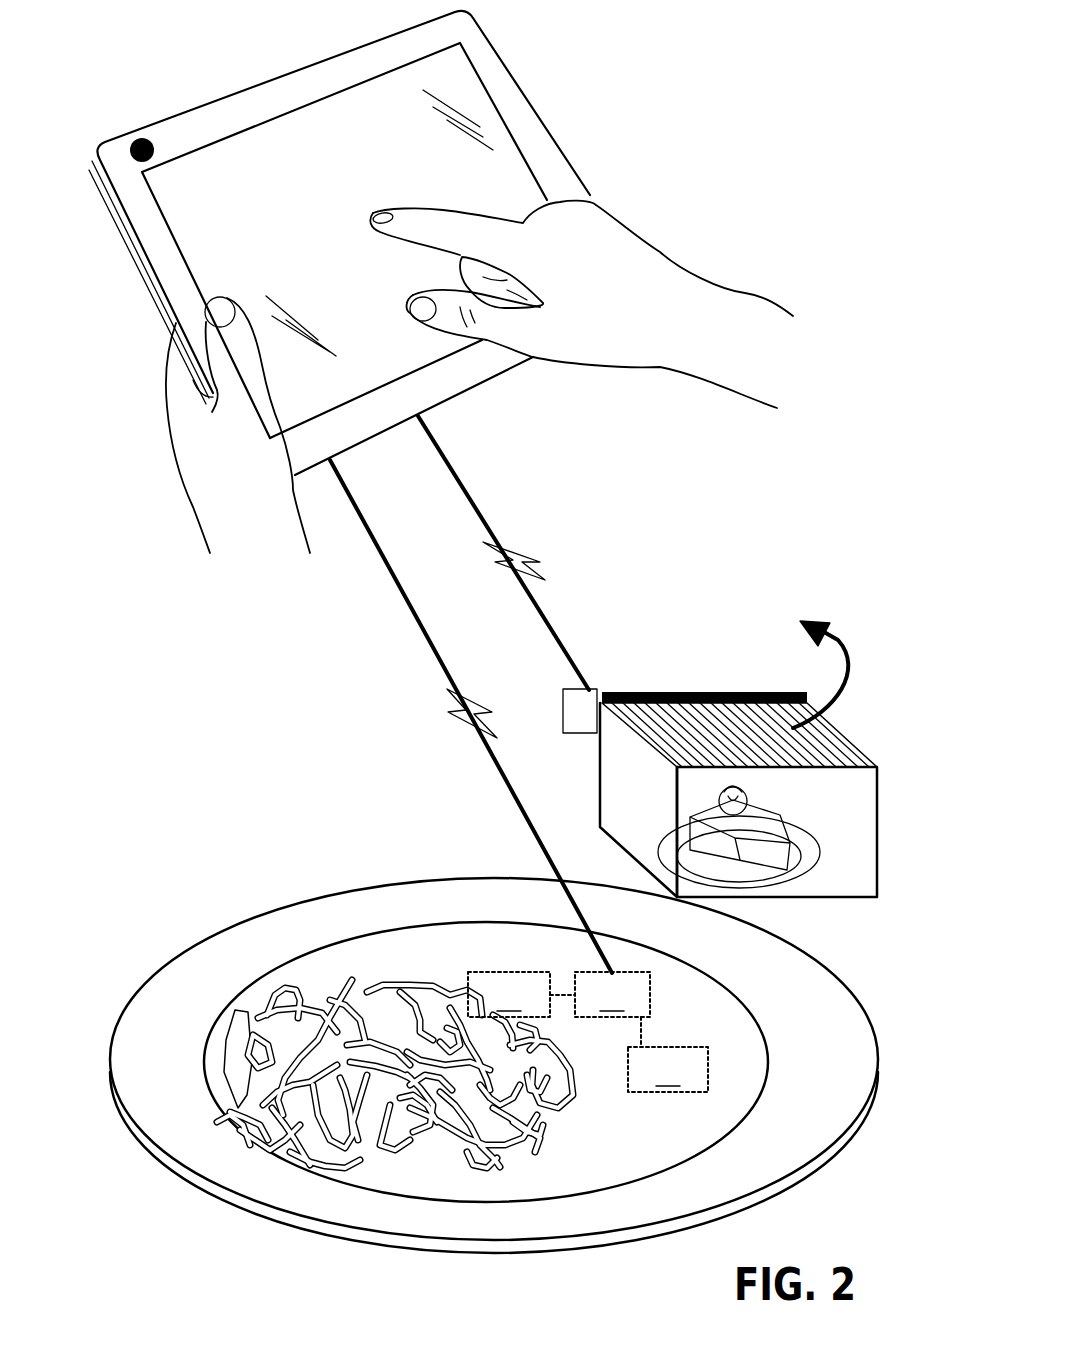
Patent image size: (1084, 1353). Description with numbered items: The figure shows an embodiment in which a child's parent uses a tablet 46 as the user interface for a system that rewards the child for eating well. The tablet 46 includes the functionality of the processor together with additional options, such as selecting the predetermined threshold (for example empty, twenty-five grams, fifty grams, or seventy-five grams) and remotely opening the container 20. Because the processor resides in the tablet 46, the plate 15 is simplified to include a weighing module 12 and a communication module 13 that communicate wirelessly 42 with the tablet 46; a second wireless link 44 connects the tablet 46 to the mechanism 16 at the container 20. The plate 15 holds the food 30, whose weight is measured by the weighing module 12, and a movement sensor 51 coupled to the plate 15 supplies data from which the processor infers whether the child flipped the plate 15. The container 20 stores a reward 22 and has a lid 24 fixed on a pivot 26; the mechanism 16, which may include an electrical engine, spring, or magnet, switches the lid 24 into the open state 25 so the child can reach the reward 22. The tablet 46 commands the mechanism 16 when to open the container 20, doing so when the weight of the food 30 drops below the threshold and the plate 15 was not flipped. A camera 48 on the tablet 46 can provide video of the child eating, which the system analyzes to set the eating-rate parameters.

The weighing module 12 is at (509, 994).
The communication module 13 is at (600, 1009).
The movement sensor 51 is at (668, 1069).
The plate 15 is at (290, 895).
The mechanism 16 is at (562, 694).
The container 20 is at (757, 790).
The reward 22 is at (777, 830).
The lid 24 is at (823, 747).
The open state 25 is at (853, 653).
The pivot 26 is at (702, 692).
The food 30 is at (560, 1108).
The wireless communication 42 is at (486, 764).
The wireless connection 44 is at (492, 509).
The tablet 46 is at (537, 107).
The camera 48 is at (133, 140).